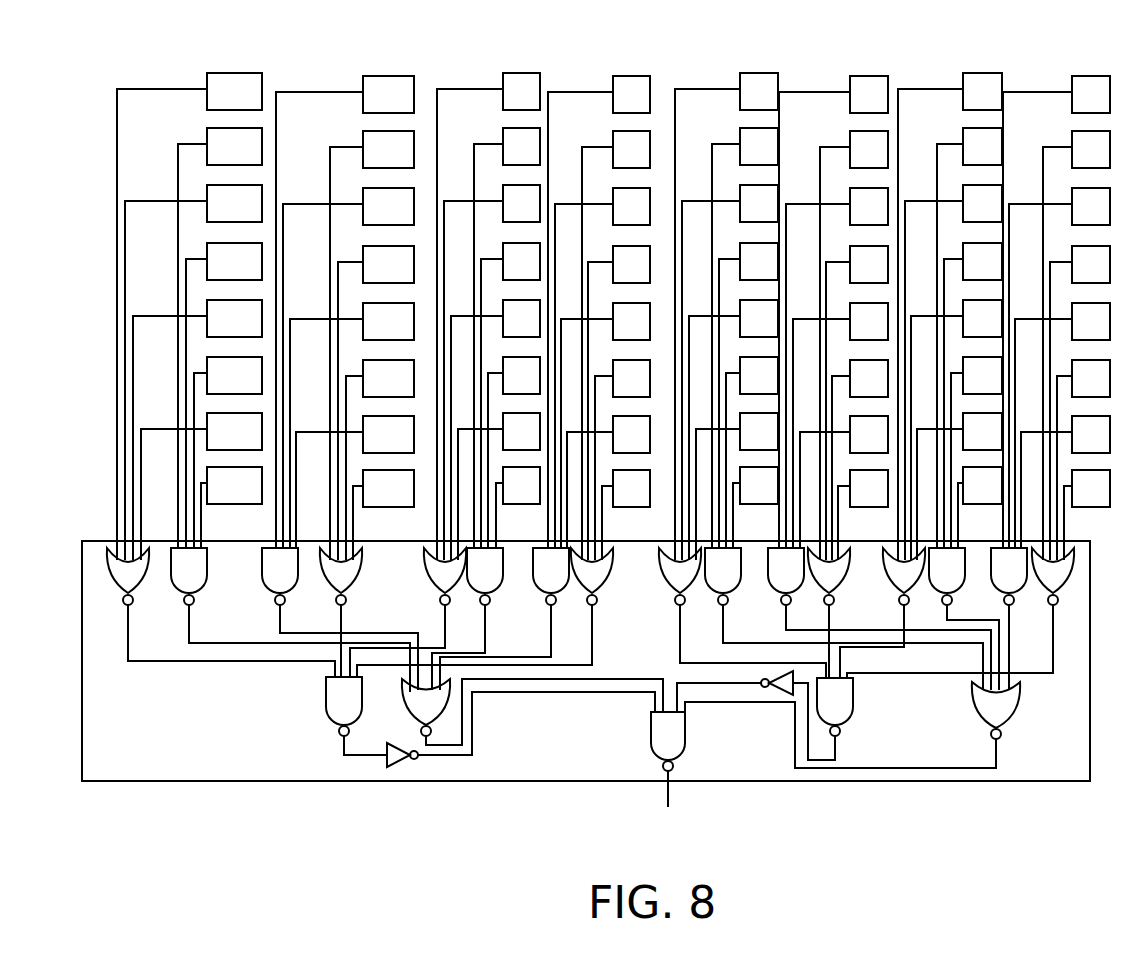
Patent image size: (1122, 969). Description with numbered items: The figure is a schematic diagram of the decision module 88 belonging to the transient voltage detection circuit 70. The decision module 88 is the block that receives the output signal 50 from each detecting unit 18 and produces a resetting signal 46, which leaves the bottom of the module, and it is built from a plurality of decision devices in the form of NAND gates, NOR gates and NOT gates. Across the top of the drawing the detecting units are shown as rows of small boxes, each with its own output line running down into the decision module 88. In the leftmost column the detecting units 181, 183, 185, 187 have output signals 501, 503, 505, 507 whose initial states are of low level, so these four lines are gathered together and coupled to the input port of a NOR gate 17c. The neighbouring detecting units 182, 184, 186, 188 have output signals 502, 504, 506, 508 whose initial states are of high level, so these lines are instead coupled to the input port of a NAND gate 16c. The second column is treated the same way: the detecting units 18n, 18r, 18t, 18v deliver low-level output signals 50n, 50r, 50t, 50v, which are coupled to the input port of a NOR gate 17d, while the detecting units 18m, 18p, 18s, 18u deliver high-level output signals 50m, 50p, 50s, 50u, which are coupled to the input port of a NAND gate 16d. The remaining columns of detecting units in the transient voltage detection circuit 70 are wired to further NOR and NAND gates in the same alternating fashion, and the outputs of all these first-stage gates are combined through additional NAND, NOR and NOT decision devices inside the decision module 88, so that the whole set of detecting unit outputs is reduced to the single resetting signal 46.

The detecting unit 181 is at (234, 91).
The detecting unit 182 is at (234, 146).
The detecting unit 183 is at (234, 203).
The detecting unit 184 is at (234, 261).
The detecting unit 185 is at (234, 318).
The detecting unit 186 is at (234, 375).
The detecting unit 187 is at (234, 431).
The detecting unit 188 is at (234, 485).
The detecting unit 18m is at (388, 94).
The detecting unit 18n is at (388, 149).
The detecting unit 18p is at (388, 206).
The detecting unit 18r is at (388, 264).
The detecting unit 18s is at (388, 321).
The detecting unit 18t is at (388, 378).
The detecting unit 18u is at (388, 434).
The detecting unit 18v is at (388, 488).
The output signal 501 is at (138, 89).
The output signal 502 is at (195, 143).
The output signal 503 is at (133, 201).
The output signal 504 is at (188, 259).
The output signal 505 is at (140, 316).
The output signal 506 is at (198, 373).
The output signal 507 is at (141, 429).
The output signal 508 is at (203, 536).
The output signal 50m is at (288, 92).
The output signal 50n is at (352, 147).
The output signal 50p is at (283, 204).
The output signal 50r is at (345, 262).
The output signal 50s is at (291, 319).
The output signal 50t is at (347, 376).
The output signal 50u is at (296, 432).
The output signal 50v is at (356, 540).
The NOR gate 17c is at (128, 576).
The NAND gate 16c is at (189, 576).
The NAND gate 16d is at (280, 576).
The NOR gate 17d is at (341, 576).
The transient voltage detection circuit 70 is at (587, 74).
The output signal 50 is at (700, 89).
The detecting unit 18 is at (778, 72).
The resetting signal 46 is at (668, 797).
The decision module 88 is at (820, 785).